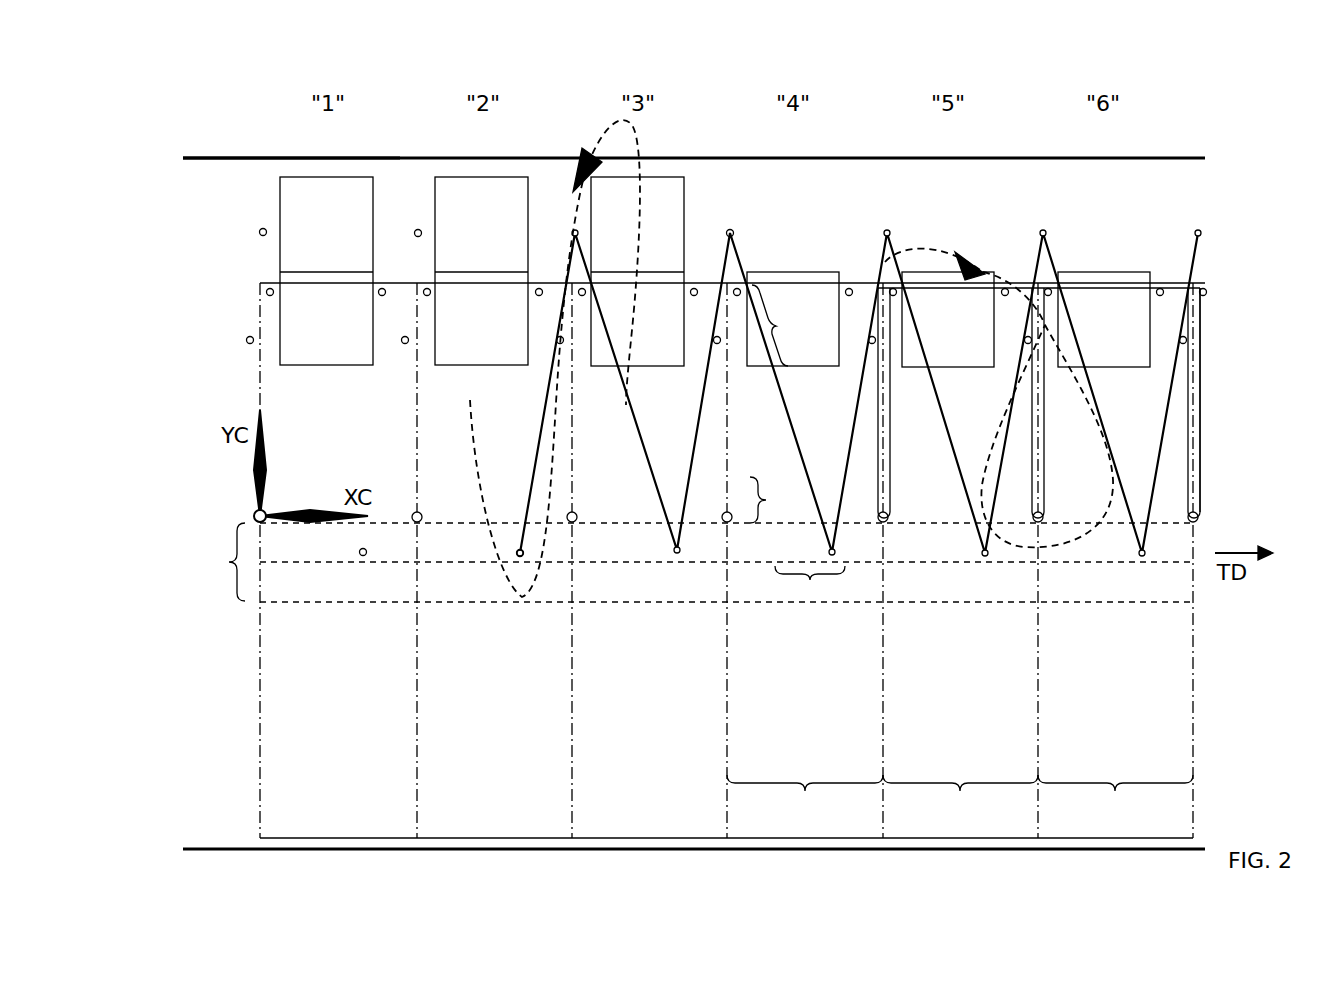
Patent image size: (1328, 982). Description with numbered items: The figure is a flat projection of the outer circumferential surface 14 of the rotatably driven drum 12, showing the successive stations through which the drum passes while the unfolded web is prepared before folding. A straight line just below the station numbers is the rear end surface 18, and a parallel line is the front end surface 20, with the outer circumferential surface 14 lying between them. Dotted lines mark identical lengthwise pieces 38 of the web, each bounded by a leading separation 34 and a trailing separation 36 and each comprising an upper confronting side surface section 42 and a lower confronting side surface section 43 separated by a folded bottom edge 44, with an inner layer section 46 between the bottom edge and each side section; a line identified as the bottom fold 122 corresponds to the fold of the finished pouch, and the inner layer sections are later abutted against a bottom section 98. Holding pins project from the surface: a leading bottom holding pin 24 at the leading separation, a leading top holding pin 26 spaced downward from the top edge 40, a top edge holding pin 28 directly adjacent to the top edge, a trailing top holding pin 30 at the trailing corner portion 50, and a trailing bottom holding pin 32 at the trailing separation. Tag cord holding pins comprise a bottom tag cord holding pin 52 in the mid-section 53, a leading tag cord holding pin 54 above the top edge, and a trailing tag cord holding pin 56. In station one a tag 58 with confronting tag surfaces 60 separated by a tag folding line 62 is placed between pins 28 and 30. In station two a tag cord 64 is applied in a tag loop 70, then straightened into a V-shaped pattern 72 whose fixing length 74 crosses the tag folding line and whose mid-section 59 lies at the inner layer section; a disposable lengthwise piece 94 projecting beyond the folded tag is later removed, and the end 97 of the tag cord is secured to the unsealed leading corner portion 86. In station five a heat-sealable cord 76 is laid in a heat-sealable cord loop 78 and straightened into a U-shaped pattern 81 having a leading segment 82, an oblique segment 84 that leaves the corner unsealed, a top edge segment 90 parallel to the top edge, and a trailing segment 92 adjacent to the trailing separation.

The drum 12 is at (270, 123).
The outer circumferential surface 14 is at (230, 141).
The rear end surface 18 is at (1178, 158).
The front end surface 20 is at (207, 847).
The leading bottom holding pin 24 is at (1200, 518).
The leading top holding pin 26 is at (1188, 342).
The top edge holding pin 28 is at (382, 290).
The trailing top holding pin 30 is at (264, 283).
The trailing bottom holding pin 32 is at (1040, 521).
The leading separation 34 is at (884, 683).
The trailing separation 36 is at (728, 683).
The lengthwise piece 38 is at (960, 794).
The top edge 40 is at (1186, 284).
The upper confronting side surface section 42 is at (433, 435).
The lower confronting side surface section 43 is at (481, 742).
The folded bottom edge 44 is at (1130, 563).
The inner layer section 46 is at (433, 552).
The trailing corner portion 50 is at (889, 287).
The bottom tag cord holding pin 52 is at (364, 556).
The mid-section 53 is at (222, 562).
The leading tag cord holding pin 54 is at (416, 230).
The trailing tag cord holding pin 56 is at (260, 232).
The tag 58 is at (358, 162).
The mid-section of the tag cord 59 is at (810, 585).
The confronting tag surfaces 60 is at (313, 236).
The tag folding line 62 is at (278, 272).
The tag cord 64 is at (630, 335).
The tag loop 70 is at (644, 162).
The V-shaped pattern 72 is at (861, 278).
The fixing length 74 is at (781, 325).
The heat-sealable cord 76 is at (892, 492).
The heat-sealable cord loop 78 is at (938, 236).
The U-shaped pattern 81 is at (1200, 389).
The leading segment 82 is at (1198, 434).
The oblique segment 84 is at (1206, 298).
The leading corner portion 86 is at (1025, 278).
The top edge segment 90 is at (1118, 288).
The trailing segment 92 is at (1046, 428).
The disposable lengthwise piece 94 is at (752, 228).
The end of the tag cord 97 is at (1058, 286).
The bottom section 98 is at (726, 500).
The bottom fold 122 is at (616, 523).